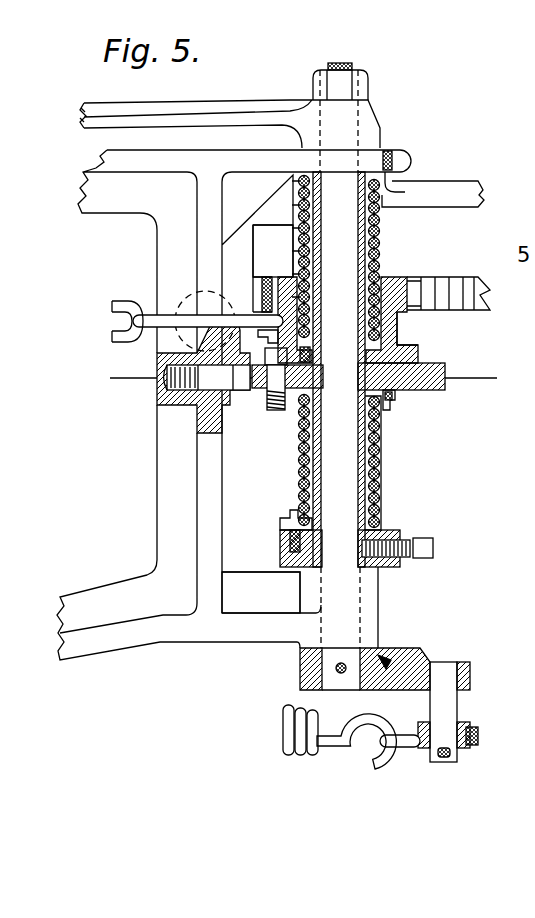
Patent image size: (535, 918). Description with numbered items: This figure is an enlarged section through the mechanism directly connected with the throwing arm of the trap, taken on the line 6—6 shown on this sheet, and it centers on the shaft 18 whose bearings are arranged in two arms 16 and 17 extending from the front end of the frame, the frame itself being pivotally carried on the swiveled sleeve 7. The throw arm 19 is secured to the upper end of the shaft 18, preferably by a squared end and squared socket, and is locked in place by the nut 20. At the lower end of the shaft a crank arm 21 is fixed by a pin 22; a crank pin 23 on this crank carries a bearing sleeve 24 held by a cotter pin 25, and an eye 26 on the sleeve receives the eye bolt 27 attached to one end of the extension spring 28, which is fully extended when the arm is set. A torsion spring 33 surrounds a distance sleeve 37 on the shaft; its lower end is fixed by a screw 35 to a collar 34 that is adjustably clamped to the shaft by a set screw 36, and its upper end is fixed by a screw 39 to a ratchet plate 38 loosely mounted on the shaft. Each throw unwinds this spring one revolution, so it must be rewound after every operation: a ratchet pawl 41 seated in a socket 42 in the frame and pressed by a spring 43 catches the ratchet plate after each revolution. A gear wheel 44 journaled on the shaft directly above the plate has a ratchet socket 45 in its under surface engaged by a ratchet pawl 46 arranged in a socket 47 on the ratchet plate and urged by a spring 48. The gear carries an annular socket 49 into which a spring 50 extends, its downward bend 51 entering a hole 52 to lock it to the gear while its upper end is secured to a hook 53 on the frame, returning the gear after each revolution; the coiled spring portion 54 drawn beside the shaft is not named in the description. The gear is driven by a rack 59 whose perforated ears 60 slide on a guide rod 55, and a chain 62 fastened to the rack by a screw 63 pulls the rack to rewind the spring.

The screws 6 is at (302, 385).
The sleeve 7 is at (277, 437).
The arm 16 is at (261, 592).
The arm 17 is at (234, 403).
The shaft 18 is at (339, 410).
The throw arm 19 is at (224, 106).
The nut 20 is at (362, 84).
The crank arm 21 is at (388, 663).
The pin 22 is at (336, 670).
The crank pin 23 is at (452, 703).
The bearing sleeve 24 is at (473, 745).
The cotter pin 25 is at (450, 754).
The eye 26 is at (407, 748).
The eye bolt 27 is at (340, 737).
The extension spring 28 is at (287, 752).
The torsion spring 33 is at (380, 473).
The collar 34 is at (396, 531).
The screw 35 is at (286, 514).
The set screw 36 is at (434, 541).
The distance sleeve 37 is at (372, 435).
The ratchet plate 38 is at (430, 389).
The screw 39 is at (395, 406).
The ratchet pawl 41 is at (208, 378).
The socket 42 is at (193, 400).
The spring 43 is at (158, 400).
The gear wheel 44 is at (403, 306).
The ratchet socket 45 is at (264, 338).
The ratchet pawl 46 is at (266, 381).
The socket 47 is at (286, 407).
The spring 48 is at (266, 410).
The annular socket 49 is at (381, 295).
The spring 50 is at (381, 222).
The downward bend 51 is at (313, 340).
The hole 52 is at (310, 355).
The hook 53 is at (396, 180).
The spring 54 is at (369, 197).
The guide rod 55 is at (433, 195).
The rack 59 is at (453, 279).
The perforated ears 60 is at (273, 251).
The chain 62 is at (124, 303).
The screw 63 is at (262, 281).